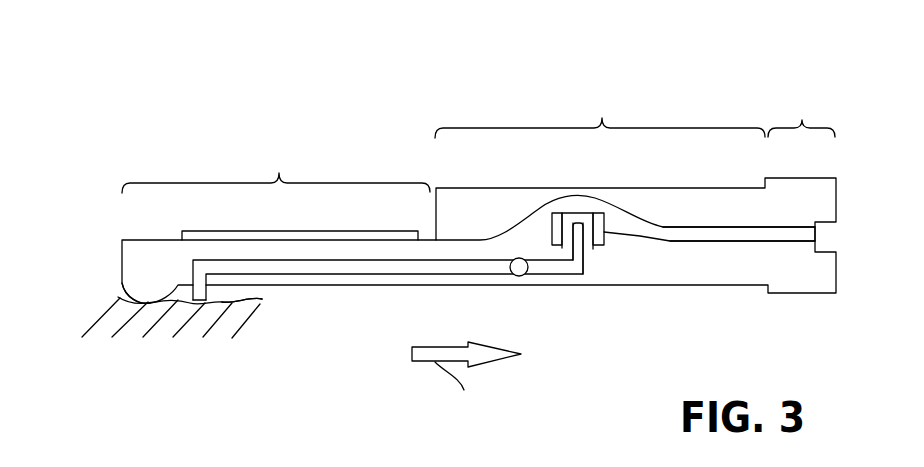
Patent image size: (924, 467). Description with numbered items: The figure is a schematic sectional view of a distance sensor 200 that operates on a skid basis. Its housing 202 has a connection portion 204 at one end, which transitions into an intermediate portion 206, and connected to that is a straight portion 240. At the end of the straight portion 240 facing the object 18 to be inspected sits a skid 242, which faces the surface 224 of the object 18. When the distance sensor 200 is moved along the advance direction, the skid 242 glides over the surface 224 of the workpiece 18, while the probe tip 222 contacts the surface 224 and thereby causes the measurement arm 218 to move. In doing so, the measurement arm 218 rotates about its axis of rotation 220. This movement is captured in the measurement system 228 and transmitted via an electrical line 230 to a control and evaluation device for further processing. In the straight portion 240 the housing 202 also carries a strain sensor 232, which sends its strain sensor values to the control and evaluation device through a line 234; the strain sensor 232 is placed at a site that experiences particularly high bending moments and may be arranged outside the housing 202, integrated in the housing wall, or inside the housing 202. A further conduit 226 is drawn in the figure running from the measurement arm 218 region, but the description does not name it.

The distance sensor 200 is at (210, 66).
The object to be inspected 18 is at (86, 309).
The housing 202 is at (448, 187).
The connection portion 204 is at (801, 115).
The intermediate portion 206 is at (600, 115).
The measurement arm 218 is at (362, 278).
The axis of rotation 220 is at (524, 277).
The probe tip 222 is at (200, 300).
The surface 224 is at (262, 299).
The inlet tube 226 is at (574, 277).
The measurement system 228 is at (605, 247).
The electrical line 230 is at (705, 242).
The strain sensor 232 is at (345, 231).
The line 234 is at (755, 227).
The straight portion 240 is at (276, 168).
The skid 242 is at (122, 284).